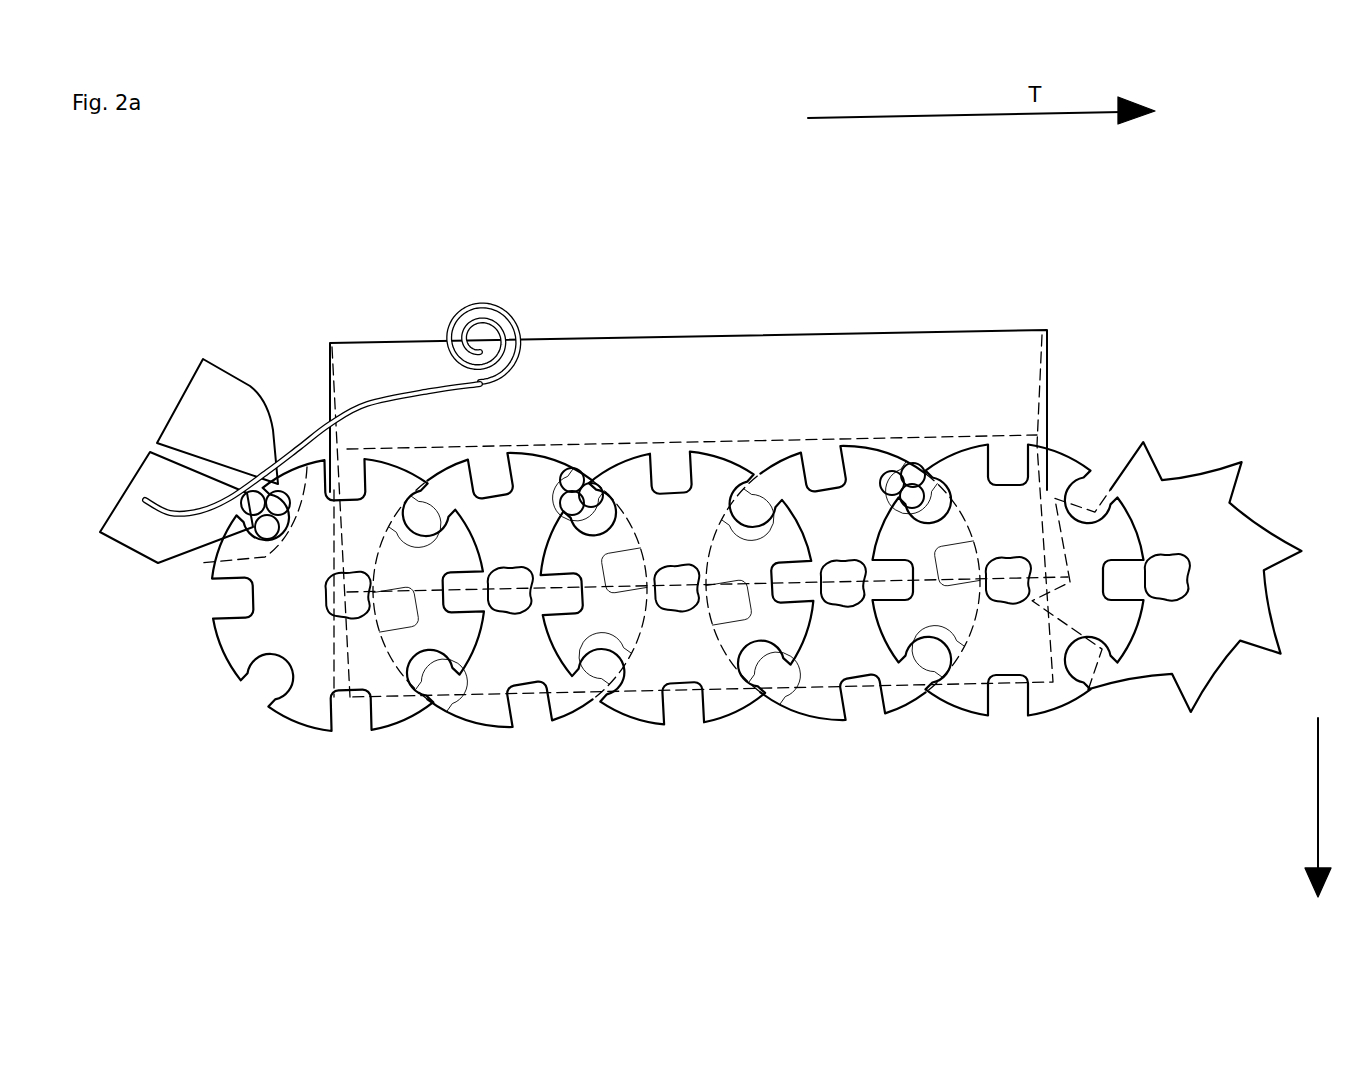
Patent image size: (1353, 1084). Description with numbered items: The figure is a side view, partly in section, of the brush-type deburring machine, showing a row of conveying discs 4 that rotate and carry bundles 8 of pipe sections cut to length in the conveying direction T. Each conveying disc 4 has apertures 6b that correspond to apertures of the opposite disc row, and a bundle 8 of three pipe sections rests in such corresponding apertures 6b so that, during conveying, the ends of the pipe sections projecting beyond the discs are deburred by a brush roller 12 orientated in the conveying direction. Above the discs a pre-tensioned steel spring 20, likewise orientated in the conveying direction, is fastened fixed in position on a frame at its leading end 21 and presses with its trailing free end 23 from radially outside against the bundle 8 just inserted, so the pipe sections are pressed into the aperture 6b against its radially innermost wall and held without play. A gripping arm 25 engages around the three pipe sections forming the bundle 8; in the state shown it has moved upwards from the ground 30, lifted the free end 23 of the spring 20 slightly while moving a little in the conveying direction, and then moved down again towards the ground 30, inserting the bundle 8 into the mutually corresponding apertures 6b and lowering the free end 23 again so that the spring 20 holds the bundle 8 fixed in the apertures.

The conveying disc 4 is at (1065, 475).
The bundle of pipe sections 8 is at (277, 500).
The brush roller 12 is at (884, 375).
The steel spring 20 is at (363, 402).
The leading end of the steel spring 21 is at (482, 330).
The free end of the steel spring 23 is at (172, 503).
The gripping arm 25 is at (207, 407).
The aperture 6b is at (243, 523).
The ground 30 is at (1318, 793).